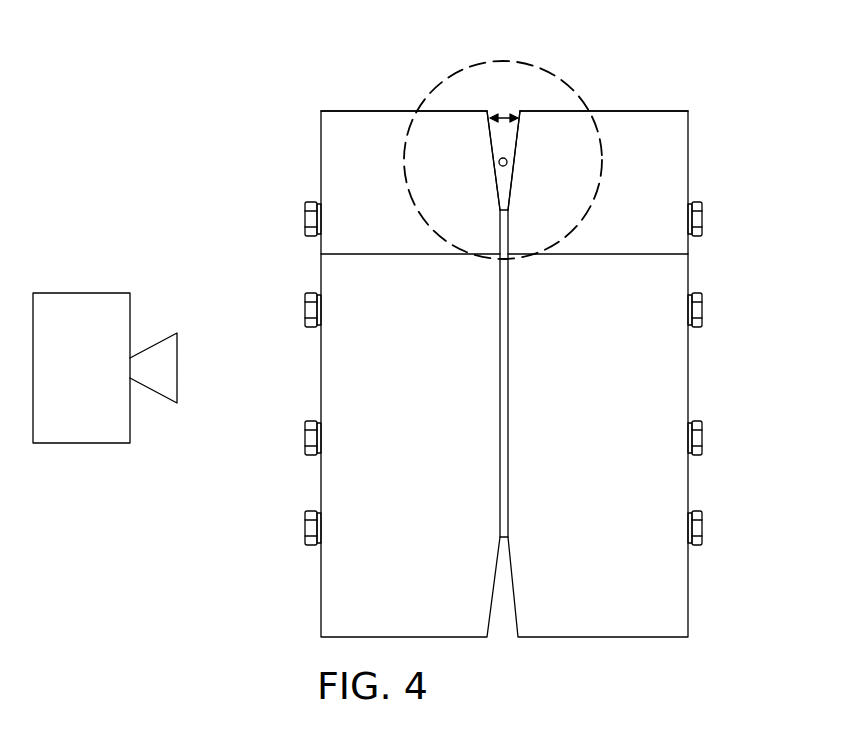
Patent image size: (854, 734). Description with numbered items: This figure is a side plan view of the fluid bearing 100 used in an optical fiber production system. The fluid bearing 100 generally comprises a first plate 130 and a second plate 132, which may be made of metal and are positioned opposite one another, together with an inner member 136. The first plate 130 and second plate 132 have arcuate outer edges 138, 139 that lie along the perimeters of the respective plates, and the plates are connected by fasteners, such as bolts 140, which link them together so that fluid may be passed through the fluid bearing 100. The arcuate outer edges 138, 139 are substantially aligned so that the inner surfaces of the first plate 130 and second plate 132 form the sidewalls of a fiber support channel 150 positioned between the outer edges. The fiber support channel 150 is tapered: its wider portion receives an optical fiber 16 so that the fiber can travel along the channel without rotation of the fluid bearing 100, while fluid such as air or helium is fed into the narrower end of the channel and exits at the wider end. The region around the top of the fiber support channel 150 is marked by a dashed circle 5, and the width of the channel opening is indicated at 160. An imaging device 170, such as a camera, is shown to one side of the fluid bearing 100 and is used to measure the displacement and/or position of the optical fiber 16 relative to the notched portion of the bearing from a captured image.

The fluid bearing 100 is at (519, 327).
The first plate 130 is at (320, 176).
The second plate 132 is at (691, 177).
The arcuate outer edge 138 is at (377, 110).
The arcuate outer edge 139 is at (670, 110).
The bolts 140 is at (702, 218).
The inner member 136 is at (508, 203).
The optical fiber 16 is at (507, 162).
The groove width 160 is at (504, 112).
The fiber support channel 150 is at (513, 108).
The detail region of FIG. 5 is at (570, 82).
The imaging device 170 is at (105, 257).